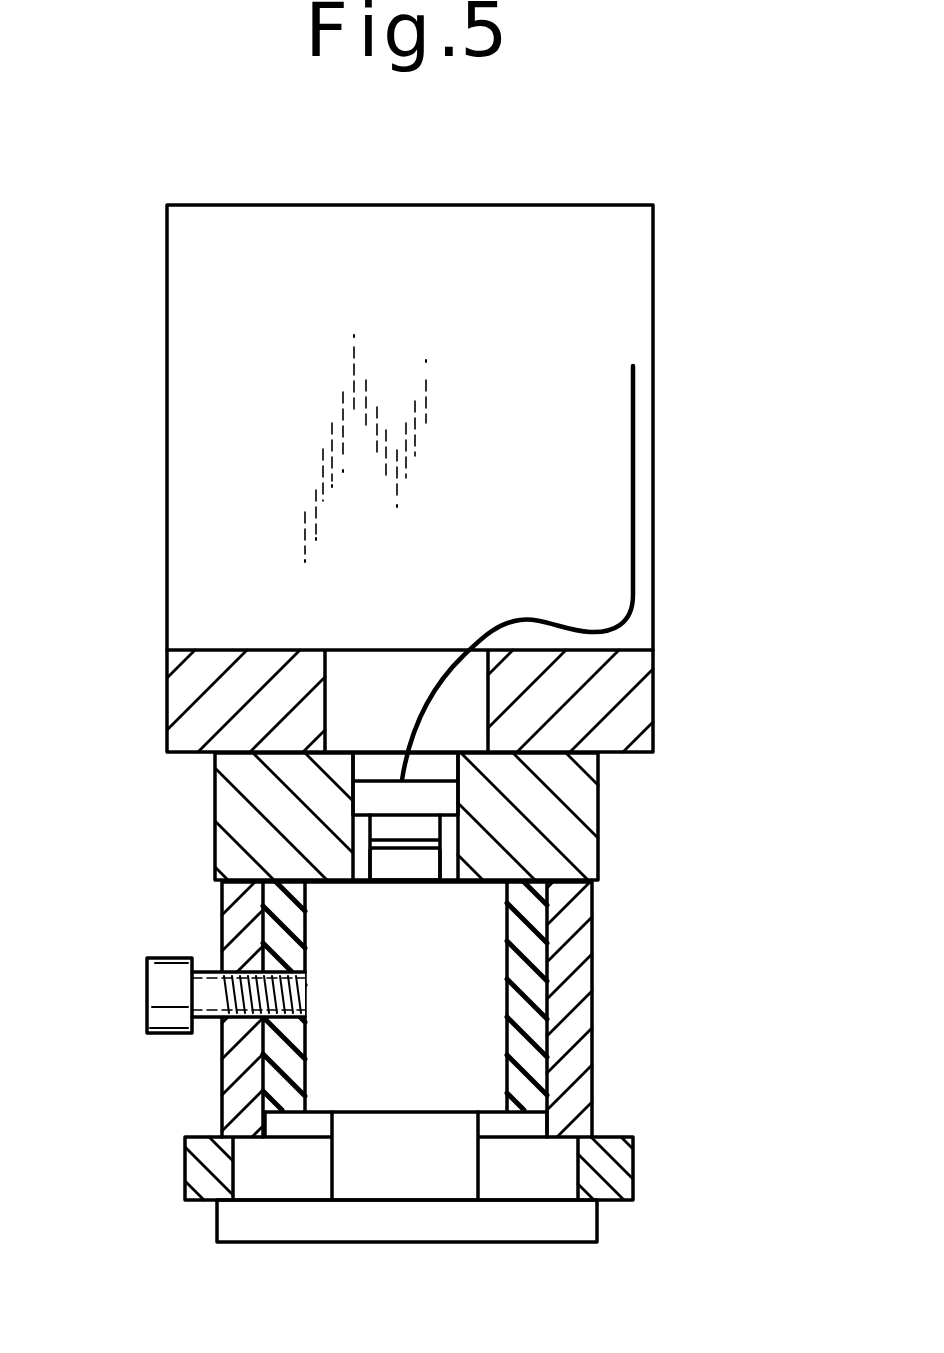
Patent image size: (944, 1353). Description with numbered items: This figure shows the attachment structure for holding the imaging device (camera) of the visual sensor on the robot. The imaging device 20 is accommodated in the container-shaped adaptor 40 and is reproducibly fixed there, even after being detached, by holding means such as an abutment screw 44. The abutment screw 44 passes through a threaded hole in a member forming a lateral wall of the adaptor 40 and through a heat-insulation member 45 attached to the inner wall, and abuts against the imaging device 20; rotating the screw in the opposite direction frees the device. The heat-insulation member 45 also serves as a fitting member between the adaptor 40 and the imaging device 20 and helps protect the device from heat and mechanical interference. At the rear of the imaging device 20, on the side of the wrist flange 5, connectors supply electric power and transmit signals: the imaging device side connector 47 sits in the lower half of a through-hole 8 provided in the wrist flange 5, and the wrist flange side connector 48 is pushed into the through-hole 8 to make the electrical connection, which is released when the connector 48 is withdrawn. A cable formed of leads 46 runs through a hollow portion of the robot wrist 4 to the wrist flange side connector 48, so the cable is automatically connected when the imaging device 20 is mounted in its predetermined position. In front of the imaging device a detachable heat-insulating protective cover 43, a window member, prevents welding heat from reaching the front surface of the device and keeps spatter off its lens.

The robot wrist 4 is at (180, 342).
The leads 46 is at (635, 552).
The wrist flange 5 is at (562, 822).
The through-hole 8 is at (445, 765).
The wrist flange side connector 48 is at (367, 803).
The imaging device side connector 47 is at (427, 860).
The adaptor 40 is at (580, 990).
The heat-insulation member 45 is at (275, 1072).
The imaging device 20 is at (480, 1088).
The abutment screw 44 is at (165, 967).
The protective cover 43 is at (263, 1222).